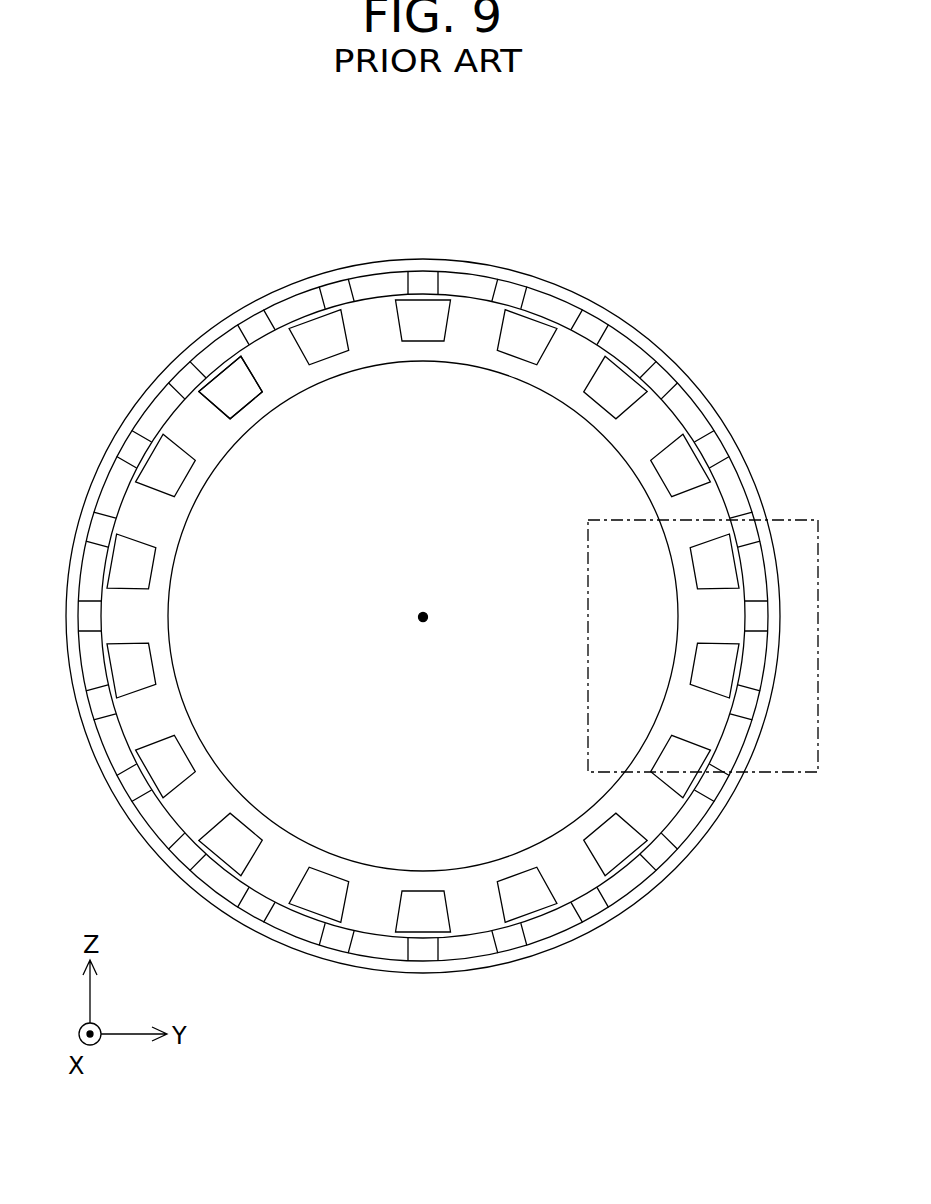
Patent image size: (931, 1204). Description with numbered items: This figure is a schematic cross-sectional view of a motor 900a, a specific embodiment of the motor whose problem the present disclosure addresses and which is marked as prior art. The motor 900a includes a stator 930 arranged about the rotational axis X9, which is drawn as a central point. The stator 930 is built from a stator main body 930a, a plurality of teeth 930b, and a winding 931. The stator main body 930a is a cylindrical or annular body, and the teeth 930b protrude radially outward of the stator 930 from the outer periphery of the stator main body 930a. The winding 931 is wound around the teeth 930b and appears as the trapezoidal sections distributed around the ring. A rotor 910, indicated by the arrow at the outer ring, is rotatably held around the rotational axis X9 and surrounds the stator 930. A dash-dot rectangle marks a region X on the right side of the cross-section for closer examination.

The motor 900a is at (830, 123).
The rotor 910 is at (704, 206).
The stator 930 is at (190, 487).
The stator main body 930a is at (248, 417).
The teeth 930b is at (497, 297).
The winding 931 is at (432, 308).
The region X is at (816, 518).
The rotational axis X9 is at (405, 618).